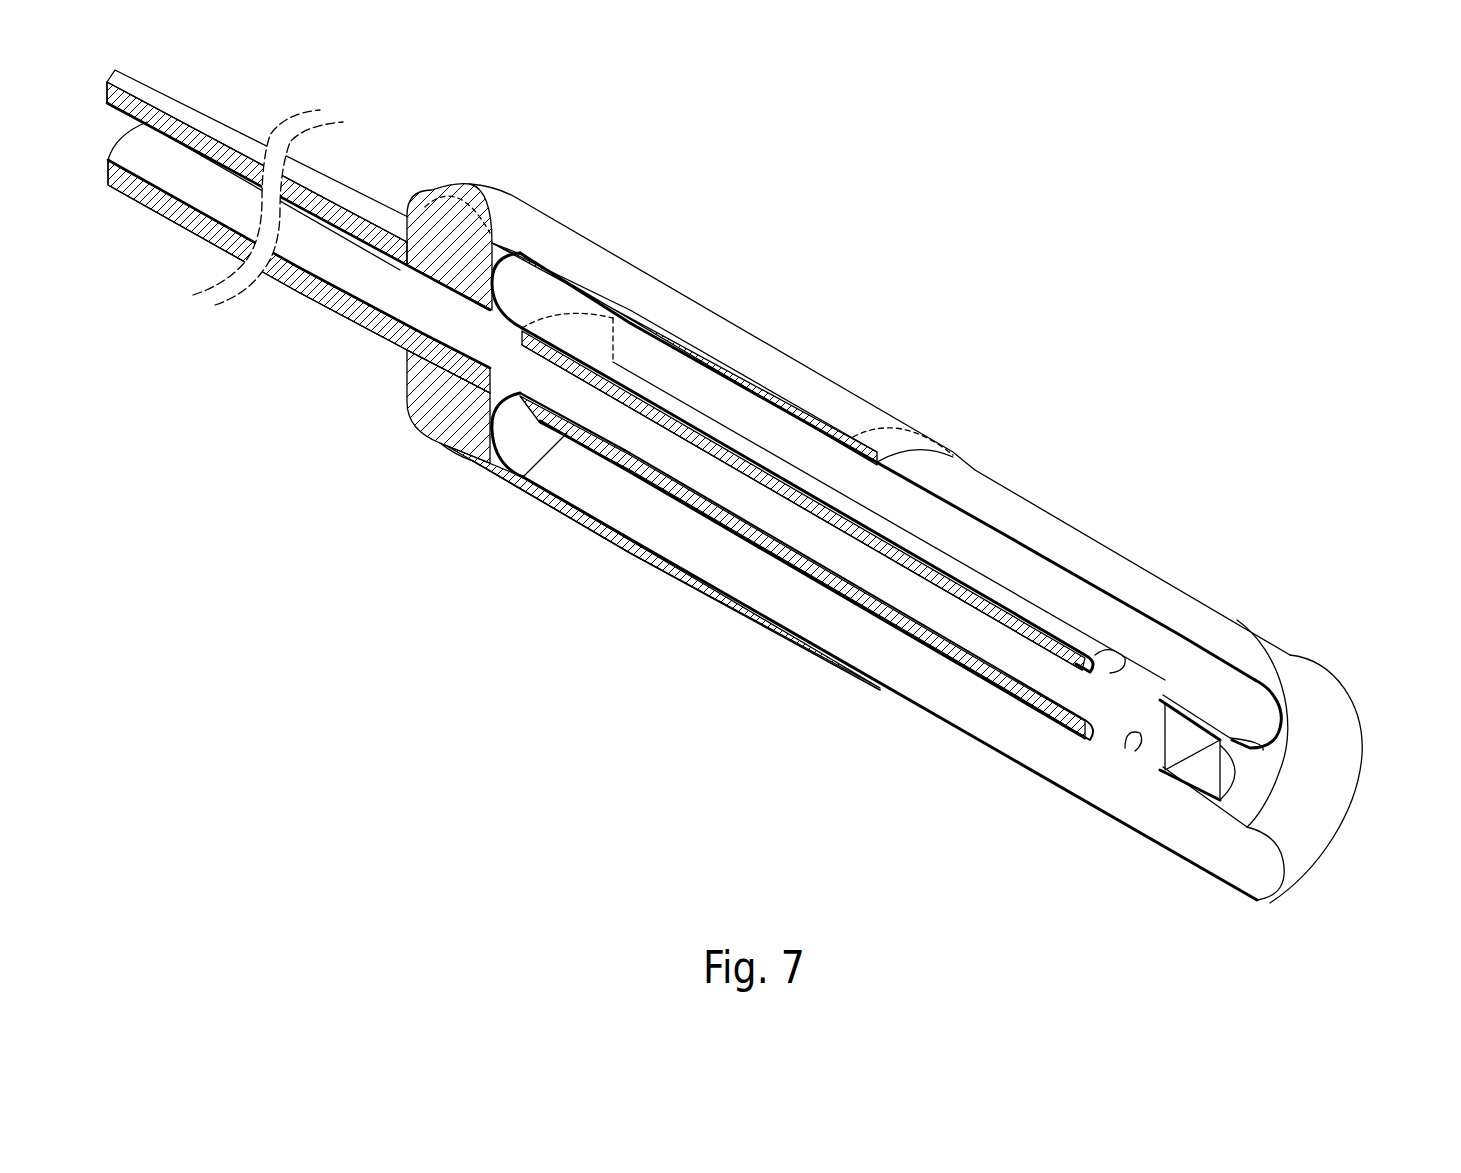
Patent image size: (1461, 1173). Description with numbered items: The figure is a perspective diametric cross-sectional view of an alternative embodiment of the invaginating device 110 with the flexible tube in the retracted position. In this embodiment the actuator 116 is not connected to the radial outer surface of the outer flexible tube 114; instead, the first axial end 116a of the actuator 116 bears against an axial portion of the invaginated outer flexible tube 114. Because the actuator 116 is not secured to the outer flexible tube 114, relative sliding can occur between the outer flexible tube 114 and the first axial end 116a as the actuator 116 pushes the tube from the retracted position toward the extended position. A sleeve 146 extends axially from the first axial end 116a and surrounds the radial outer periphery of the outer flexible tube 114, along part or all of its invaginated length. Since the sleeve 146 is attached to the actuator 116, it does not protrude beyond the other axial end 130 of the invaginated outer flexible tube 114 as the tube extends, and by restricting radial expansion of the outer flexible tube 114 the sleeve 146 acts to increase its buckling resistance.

The invaginating device 110 is at (965, 318).
The outer flexible tube 114 is at (1043, 520).
The actuator 116 is at (433, 226).
The first axial end 116a is at (487, 200).
The other axial end 130 is at (1330, 733).
The sleeve 146 is at (657, 570).